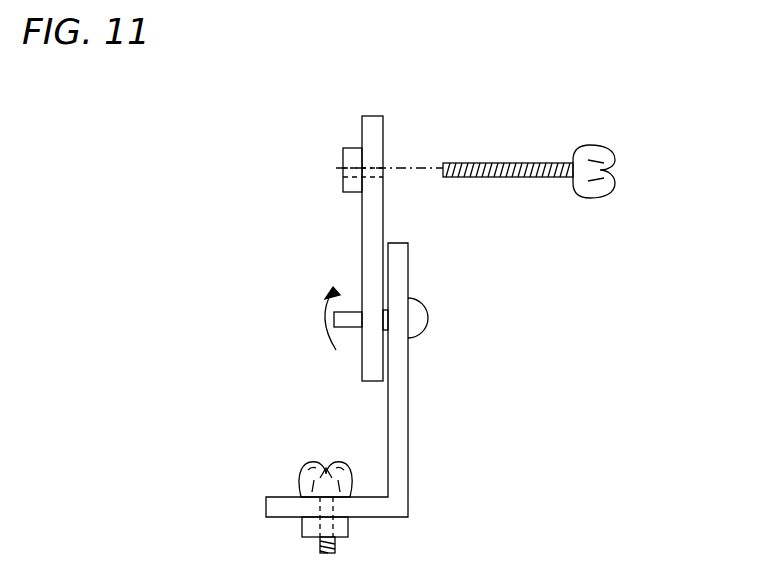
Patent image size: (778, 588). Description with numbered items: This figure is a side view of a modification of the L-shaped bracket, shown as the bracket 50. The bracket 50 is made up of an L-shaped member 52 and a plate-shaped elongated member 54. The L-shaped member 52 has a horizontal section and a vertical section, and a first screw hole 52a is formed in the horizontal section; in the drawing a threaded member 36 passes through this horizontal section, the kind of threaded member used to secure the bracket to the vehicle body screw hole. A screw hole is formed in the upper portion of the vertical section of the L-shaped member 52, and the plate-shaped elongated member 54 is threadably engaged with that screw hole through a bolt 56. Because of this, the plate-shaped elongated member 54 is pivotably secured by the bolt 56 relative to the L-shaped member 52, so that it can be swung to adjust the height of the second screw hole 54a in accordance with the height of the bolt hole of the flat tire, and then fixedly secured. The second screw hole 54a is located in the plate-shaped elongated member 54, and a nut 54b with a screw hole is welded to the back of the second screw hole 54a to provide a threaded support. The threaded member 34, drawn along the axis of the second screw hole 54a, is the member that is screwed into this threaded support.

The threaded member 34 is at (615, 170).
The threaded member 36 is at (328, 470).
The bracket 50 is at (492, 265).
The L-shaped member 52 is at (408, 393).
The first screw hole 52a is at (335, 508).
The plate-shaped elongated member 54 is at (363, 250).
The second screw hole 54a is at (374, 166).
The nut 54b is at (343, 150).
The bolt 56 is at (428, 318).